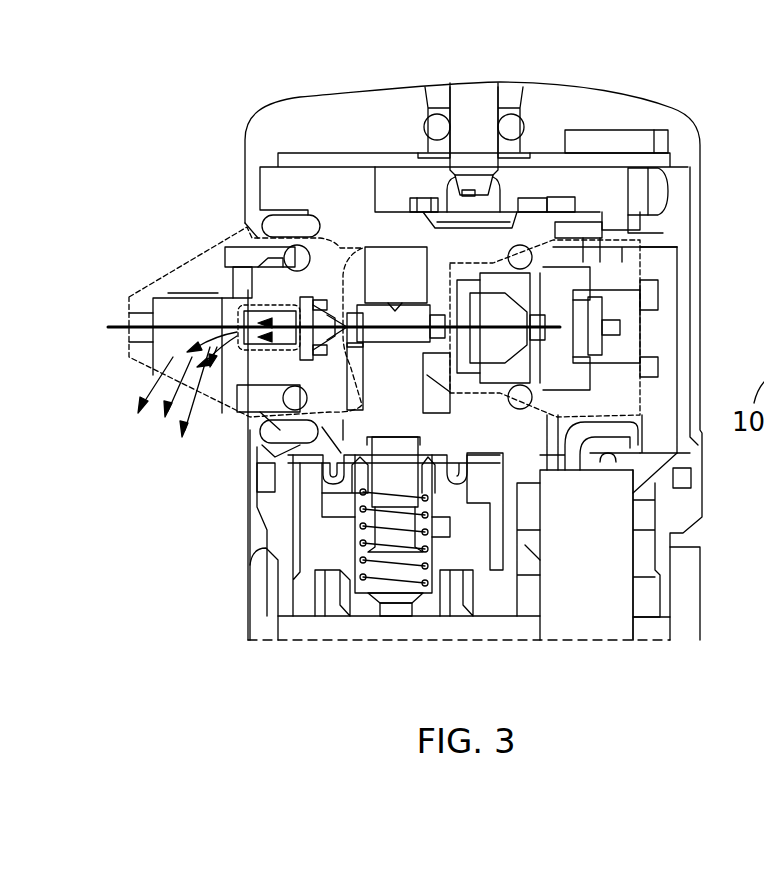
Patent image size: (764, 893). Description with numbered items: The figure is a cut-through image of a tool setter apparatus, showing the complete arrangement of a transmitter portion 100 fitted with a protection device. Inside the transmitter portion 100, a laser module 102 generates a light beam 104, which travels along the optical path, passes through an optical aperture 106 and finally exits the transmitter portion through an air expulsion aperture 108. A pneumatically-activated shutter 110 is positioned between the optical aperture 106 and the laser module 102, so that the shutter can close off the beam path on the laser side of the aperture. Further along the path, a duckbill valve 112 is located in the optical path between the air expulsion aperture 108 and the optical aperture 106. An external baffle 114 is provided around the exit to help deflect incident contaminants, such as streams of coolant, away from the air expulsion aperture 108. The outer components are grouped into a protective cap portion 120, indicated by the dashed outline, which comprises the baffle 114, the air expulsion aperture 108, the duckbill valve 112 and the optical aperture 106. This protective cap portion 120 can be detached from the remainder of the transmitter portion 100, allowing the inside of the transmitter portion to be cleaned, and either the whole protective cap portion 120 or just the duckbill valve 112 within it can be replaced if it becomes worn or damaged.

The transmitter portion 100 is at (632, 97).
The laser module 102 is at (647, 235).
The light beam 104 is at (117, 320).
The optical aperture 106 is at (350, 300).
The air expulsion aperture 108 is at (217, 237).
The pneumatically-activated shutter 110 is at (386, 513).
The duckbill valve 112 is at (224, 240).
The external baffle 114 is at (194, 280).
The protective cap portion 120 is at (183, 257).